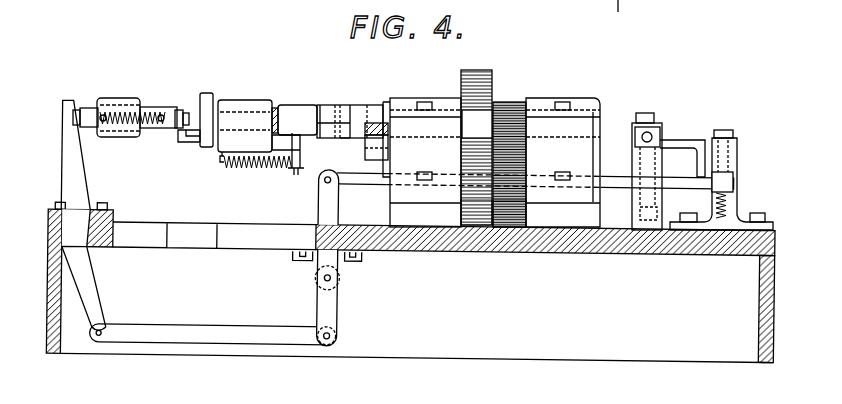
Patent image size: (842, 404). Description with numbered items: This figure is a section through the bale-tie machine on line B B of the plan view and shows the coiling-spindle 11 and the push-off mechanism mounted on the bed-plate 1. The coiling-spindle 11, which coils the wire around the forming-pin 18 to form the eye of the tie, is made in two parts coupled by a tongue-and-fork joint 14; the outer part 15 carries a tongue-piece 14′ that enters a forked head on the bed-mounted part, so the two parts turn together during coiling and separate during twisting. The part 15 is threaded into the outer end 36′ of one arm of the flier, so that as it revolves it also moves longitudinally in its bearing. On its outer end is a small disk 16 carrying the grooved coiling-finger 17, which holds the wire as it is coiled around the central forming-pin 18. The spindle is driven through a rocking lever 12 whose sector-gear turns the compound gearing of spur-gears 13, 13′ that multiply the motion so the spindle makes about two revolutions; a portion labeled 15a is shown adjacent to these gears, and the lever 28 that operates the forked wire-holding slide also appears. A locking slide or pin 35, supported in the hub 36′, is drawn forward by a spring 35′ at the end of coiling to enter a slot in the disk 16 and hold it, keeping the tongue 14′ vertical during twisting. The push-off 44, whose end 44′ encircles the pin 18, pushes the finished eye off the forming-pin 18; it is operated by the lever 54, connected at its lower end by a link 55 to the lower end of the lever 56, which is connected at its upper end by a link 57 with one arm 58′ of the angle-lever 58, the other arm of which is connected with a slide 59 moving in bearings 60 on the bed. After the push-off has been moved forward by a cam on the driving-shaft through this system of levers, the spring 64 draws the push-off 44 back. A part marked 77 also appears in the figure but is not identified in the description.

The bed-plate 1 is at (410, 282).
The coiling-spindle 11 is at (222, 100).
The rocking lever 12 is at (476, 142).
The spur-gear 13 is at (510, 102).
The spur-gear 13′ is at (513, 228).
The tongue-and-fork joint 14 is at (324, 105).
The tongue-piece 14′ is at (322, 138).
The part of the coiling-spindle 15 is at (275, 108).
The gear hub 15a is at (477, 124).
The disk 16 is at (207, 113).
The coiling-finger 17 is at (190, 142).
The forming-pin 18 is at (186, 113).
The lever 28 is at (372, 135).
The slide or pin 35 is at (294, 140).
The spring 35′ is at (256, 168).
The outer end or hub of flier arm 36′ is at (245, 121).
The push-off 44 is at (80, 108).
The end of the push-off 44′ is at (179, 110).
The lever 54 is at (73, 217).
The link 55 is at (208, 327).
The lever 56 is at (326, 297).
The link 57 is at (526, 200).
The angle-lever 58 is at (721, 178).
The arm of the angle-lever 58′ is at (735, 180).
The slide 59 is at (653, 127).
The bearings 60 is at (647, 171).
The spring 64 is at (150, 129).
The housing 77 is at (599, 105).